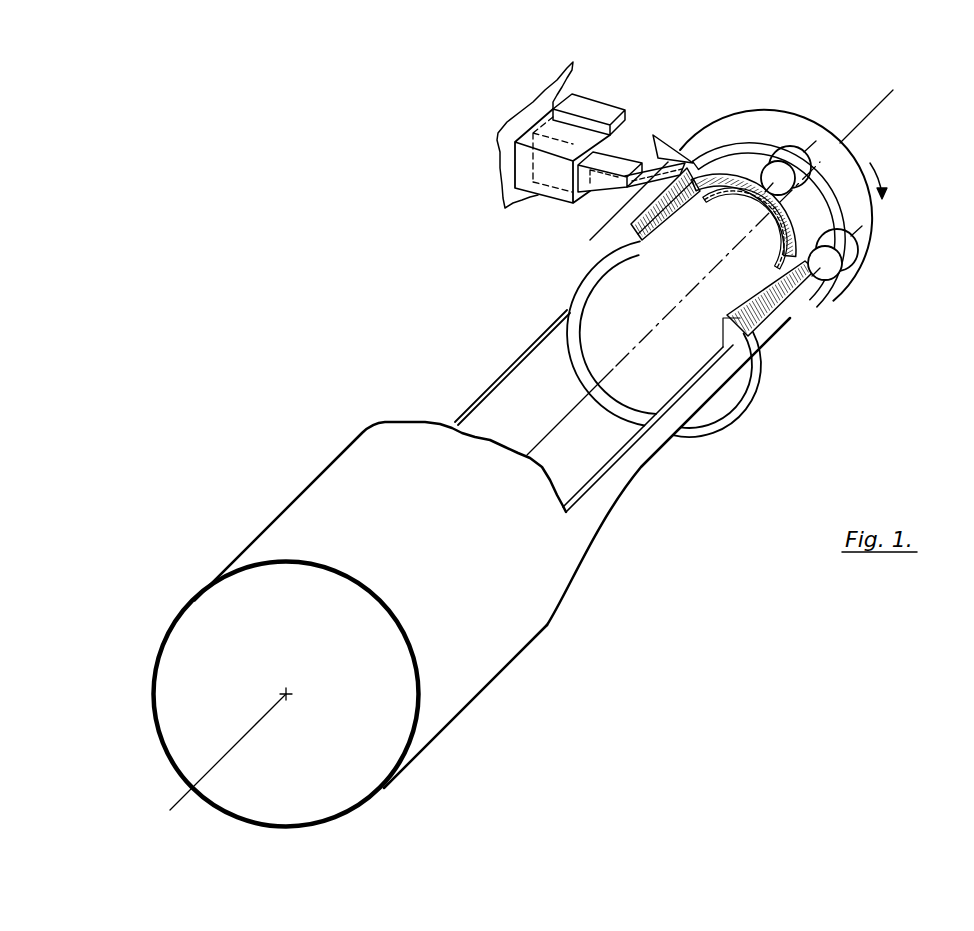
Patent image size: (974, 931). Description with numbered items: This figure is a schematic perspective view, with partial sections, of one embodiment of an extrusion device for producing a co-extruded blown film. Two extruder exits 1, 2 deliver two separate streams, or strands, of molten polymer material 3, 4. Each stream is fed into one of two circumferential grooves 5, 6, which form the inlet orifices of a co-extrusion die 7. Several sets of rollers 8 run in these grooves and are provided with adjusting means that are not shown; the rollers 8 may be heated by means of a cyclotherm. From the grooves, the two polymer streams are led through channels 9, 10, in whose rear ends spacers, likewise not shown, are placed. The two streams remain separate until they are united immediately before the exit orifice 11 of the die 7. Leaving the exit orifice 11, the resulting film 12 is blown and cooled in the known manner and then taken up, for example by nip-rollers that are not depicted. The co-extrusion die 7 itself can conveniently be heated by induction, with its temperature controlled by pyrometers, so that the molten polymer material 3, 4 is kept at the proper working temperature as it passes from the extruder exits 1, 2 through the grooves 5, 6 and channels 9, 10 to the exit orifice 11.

The extruder exit 1 is at (548, 189).
The extruder exit 2 is at (602, 105).
The molten polymer material 3 is at (646, 178).
The molten polymer material 4 is at (672, 150).
The circumferential groove 5 is at (811, 198).
The circumferential groove 6 is at (749, 157).
The co-extrusion die 7 is at (779, 336).
The rollers 8 is at (803, 165).
The channel 9 is at (636, 226).
The channel 10 is at (665, 233).
The exit orifice 11 is at (583, 282).
The film 12 is at (609, 509).